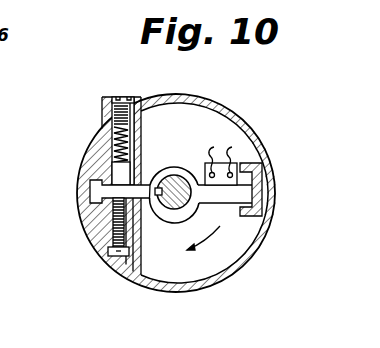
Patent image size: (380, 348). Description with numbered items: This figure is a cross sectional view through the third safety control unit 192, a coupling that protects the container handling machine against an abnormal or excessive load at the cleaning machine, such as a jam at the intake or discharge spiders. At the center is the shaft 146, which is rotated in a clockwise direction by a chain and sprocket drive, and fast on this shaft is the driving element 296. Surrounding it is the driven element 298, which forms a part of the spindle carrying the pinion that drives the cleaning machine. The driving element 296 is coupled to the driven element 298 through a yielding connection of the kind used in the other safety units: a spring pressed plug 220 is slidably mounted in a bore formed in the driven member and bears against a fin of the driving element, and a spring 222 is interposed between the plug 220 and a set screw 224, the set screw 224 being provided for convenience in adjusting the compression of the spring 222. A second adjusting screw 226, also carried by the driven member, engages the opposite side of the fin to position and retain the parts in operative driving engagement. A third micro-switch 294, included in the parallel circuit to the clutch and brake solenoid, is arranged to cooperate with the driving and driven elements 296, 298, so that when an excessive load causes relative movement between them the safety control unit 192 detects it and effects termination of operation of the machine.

The third safety control unit 192 is at (72, 155).
The driven element 298 is at (222, 105).
The spring 222 is at (112, 142).
The set screw 224 is at (119, 97).
The spring pressed plug 220 is at (118, 173).
The second adjusting screw 226 is at (110, 238).
The shaft 146 is at (161, 177).
The third micro-switch 294 is at (205, 164).
The driving element 296 is at (190, 235).